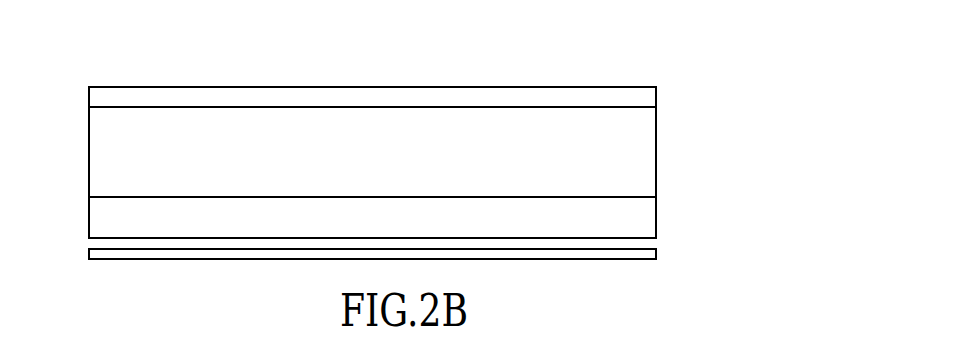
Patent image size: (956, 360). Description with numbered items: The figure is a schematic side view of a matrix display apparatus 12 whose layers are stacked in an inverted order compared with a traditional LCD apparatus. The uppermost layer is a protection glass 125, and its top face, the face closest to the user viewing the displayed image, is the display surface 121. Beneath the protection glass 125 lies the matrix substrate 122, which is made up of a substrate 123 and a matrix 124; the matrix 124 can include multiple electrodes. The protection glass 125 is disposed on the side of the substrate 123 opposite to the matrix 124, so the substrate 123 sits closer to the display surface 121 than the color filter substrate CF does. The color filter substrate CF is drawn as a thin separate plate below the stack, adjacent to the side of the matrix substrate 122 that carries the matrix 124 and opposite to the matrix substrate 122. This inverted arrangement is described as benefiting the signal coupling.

The matrix display apparatus 12 is at (130, 43).
The display surface 121 is at (556, 87).
The matrix substrate 122 is at (735, 138).
The substrate 123 is at (656, 150).
The matrix 124 is at (656, 215).
The protection glass 125 is at (656, 93).
The color filter substrate CF is at (656, 254).